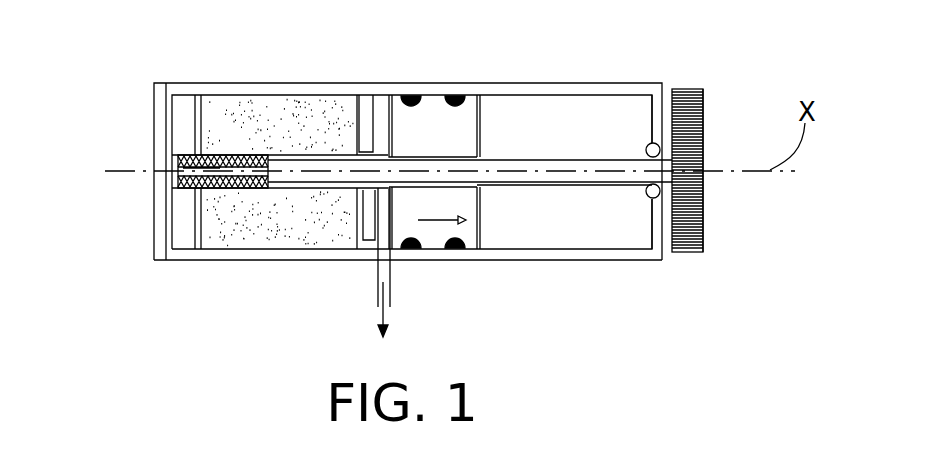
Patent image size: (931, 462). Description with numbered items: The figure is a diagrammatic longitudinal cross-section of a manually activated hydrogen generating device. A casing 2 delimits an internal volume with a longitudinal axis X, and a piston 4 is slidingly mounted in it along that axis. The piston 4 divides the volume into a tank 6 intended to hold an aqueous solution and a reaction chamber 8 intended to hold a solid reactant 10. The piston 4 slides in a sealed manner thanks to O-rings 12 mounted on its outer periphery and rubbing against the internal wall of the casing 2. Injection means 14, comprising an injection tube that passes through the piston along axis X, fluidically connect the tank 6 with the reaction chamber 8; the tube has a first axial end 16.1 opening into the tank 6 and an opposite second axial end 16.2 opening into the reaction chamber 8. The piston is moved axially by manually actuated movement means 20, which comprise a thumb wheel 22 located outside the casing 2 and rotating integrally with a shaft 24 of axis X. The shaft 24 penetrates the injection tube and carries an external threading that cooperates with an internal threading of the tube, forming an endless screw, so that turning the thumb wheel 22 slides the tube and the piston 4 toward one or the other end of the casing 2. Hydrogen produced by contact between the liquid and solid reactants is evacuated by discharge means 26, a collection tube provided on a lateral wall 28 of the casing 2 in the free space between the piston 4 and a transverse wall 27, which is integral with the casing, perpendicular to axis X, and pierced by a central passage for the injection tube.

The casing 2 is at (548, 82).
The piston 4 is at (437, 95).
The tank 6 is at (596, 100).
The reaction chamber 8 is at (182, 117).
The solid reactant 10 is at (260, 117).
The O-rings 12 is at (460, 95).
The injection means 14 is at (298, 156).
The first axial end 16.1 is at (480, 156).
The second axial end 16.2 is at (184, 193).
The movement means 20 is at (688, 88).
The thumb wheel 22 is at (702, 130).
The shaft 24 is at (543, 172).
The discharge means 26 is at (393, 278).
The transverse wall 27 is at (356, 238).
The lateral wall 28 is at (593, 261).